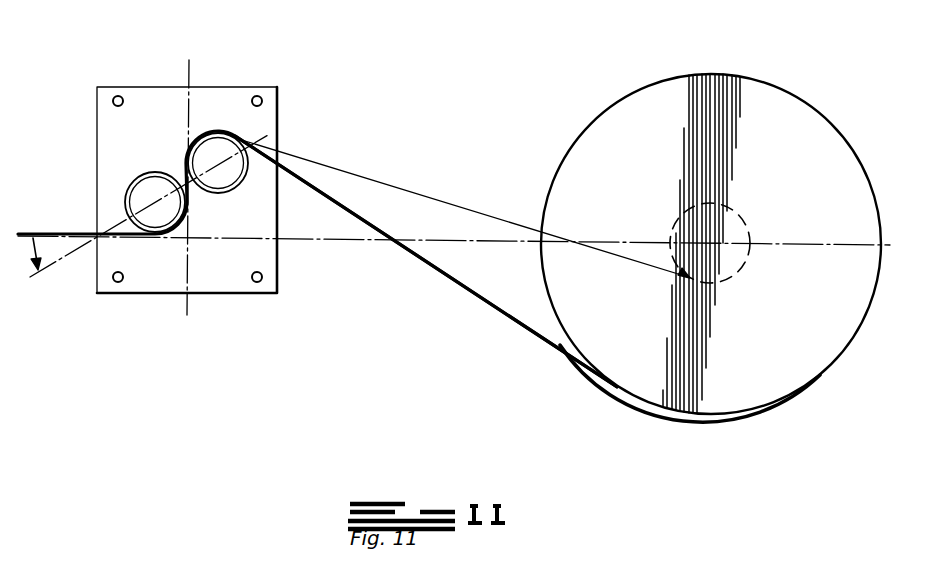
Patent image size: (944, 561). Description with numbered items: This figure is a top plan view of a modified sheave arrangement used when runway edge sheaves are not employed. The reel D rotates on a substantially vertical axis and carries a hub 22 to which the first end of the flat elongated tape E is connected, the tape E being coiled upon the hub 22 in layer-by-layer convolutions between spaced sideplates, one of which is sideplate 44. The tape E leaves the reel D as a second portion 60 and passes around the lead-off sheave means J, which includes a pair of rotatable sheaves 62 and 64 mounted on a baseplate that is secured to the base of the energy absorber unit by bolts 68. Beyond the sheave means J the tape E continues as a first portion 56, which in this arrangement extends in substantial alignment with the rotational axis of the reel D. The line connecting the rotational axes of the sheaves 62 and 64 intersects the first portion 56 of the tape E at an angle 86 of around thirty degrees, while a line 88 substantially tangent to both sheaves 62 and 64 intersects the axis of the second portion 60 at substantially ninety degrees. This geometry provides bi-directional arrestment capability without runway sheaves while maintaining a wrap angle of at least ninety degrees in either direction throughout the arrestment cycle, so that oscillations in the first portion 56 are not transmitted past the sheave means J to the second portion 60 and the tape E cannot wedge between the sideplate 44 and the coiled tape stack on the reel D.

The lead-off sheave means J is at (150, 68).
The line tangent to both sheaves 88 is at (192, 72).
The bolts 68 is at (260, 97).
The sheave 64 is at (152, 172).
The sheave 62 is at (222, 195).
The first portion of tape 56 is at (77, 232).
The second portion of tape 60 is at (402, 188).
The flat elongated tape E is at (38, 226).
The angle 86 is at (31, 250).
The reel D is at (800, 80).
The sideplate 44 is at (698, 87).
The hub 22 is at (728, 203).